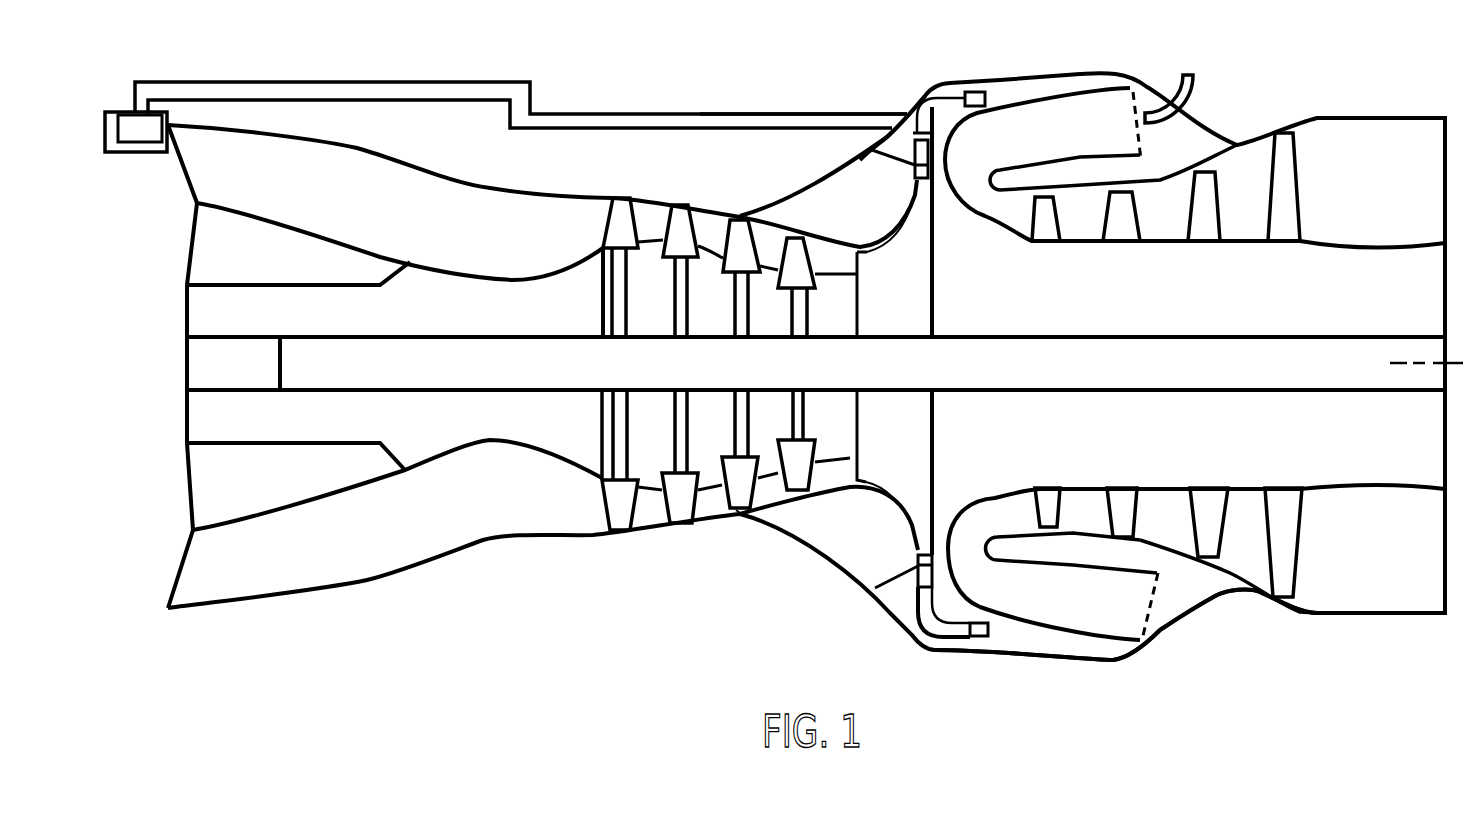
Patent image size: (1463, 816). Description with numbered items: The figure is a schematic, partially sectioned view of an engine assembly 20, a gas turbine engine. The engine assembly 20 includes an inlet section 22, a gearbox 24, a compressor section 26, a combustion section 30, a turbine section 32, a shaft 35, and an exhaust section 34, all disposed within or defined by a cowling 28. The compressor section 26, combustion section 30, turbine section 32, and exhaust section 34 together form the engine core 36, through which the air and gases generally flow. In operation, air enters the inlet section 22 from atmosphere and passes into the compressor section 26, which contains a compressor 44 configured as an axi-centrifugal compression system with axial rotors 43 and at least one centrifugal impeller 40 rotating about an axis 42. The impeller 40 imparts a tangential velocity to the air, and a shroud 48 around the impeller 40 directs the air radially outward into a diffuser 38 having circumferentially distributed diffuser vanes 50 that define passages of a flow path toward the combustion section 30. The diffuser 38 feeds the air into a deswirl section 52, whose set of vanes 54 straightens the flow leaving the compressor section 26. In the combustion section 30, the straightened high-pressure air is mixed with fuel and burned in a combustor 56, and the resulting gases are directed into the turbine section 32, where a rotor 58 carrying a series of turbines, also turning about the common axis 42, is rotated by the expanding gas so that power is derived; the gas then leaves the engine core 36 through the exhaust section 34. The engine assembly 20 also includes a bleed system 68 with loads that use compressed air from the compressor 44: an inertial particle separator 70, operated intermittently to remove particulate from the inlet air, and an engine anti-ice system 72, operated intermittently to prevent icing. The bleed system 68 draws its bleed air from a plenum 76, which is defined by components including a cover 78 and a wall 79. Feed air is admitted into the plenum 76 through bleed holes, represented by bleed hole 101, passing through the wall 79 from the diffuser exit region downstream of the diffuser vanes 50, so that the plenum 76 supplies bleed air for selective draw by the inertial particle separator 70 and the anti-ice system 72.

The engine assembly 20 is at (1012, 40).
The inlet section 22 is at (189, 184).
The gearbox 24 is at (189, 422).
The compressor section 26 is at (672, 362).
The cowling 28 is at (312, 594).
The combustion section 30 is at (1079, 640).
The turbine section 32 is at (1248, 565).
The exhaust section 34 is at (1399, 132).
The shaft 35 is at (816, 366).
The engine core 36 is at (777, 234).
The diffuser 38 is at (923, 608).
The centrifugal impeller 40 is at (943, 230).
The axis 42 is at (1425, 362).
The axial rotor 43 is at (608, 492).
The compressor 44 is at (740, 514).
The shroud 48 is at (646, 196).
The diffuser vane 50 is at (912, 192).
The deswirl section 52 is at (956, 90).
The vane 54 is at (973, 92).
The combustor 56 is at (1195, 357).
The rotor 58 is at (1298, 163).
The bleed system 68 is at (783, 97).
The inertial particle separator 70 is at (117, 154).
The engine anti-ice system 72 is at (140, 116).
The plenum 76 is at (912, 96).
The cover 78 is at (903, 112).
The wall 79 is at (912, 165).
The bleed hole 101 is at (943, 138).